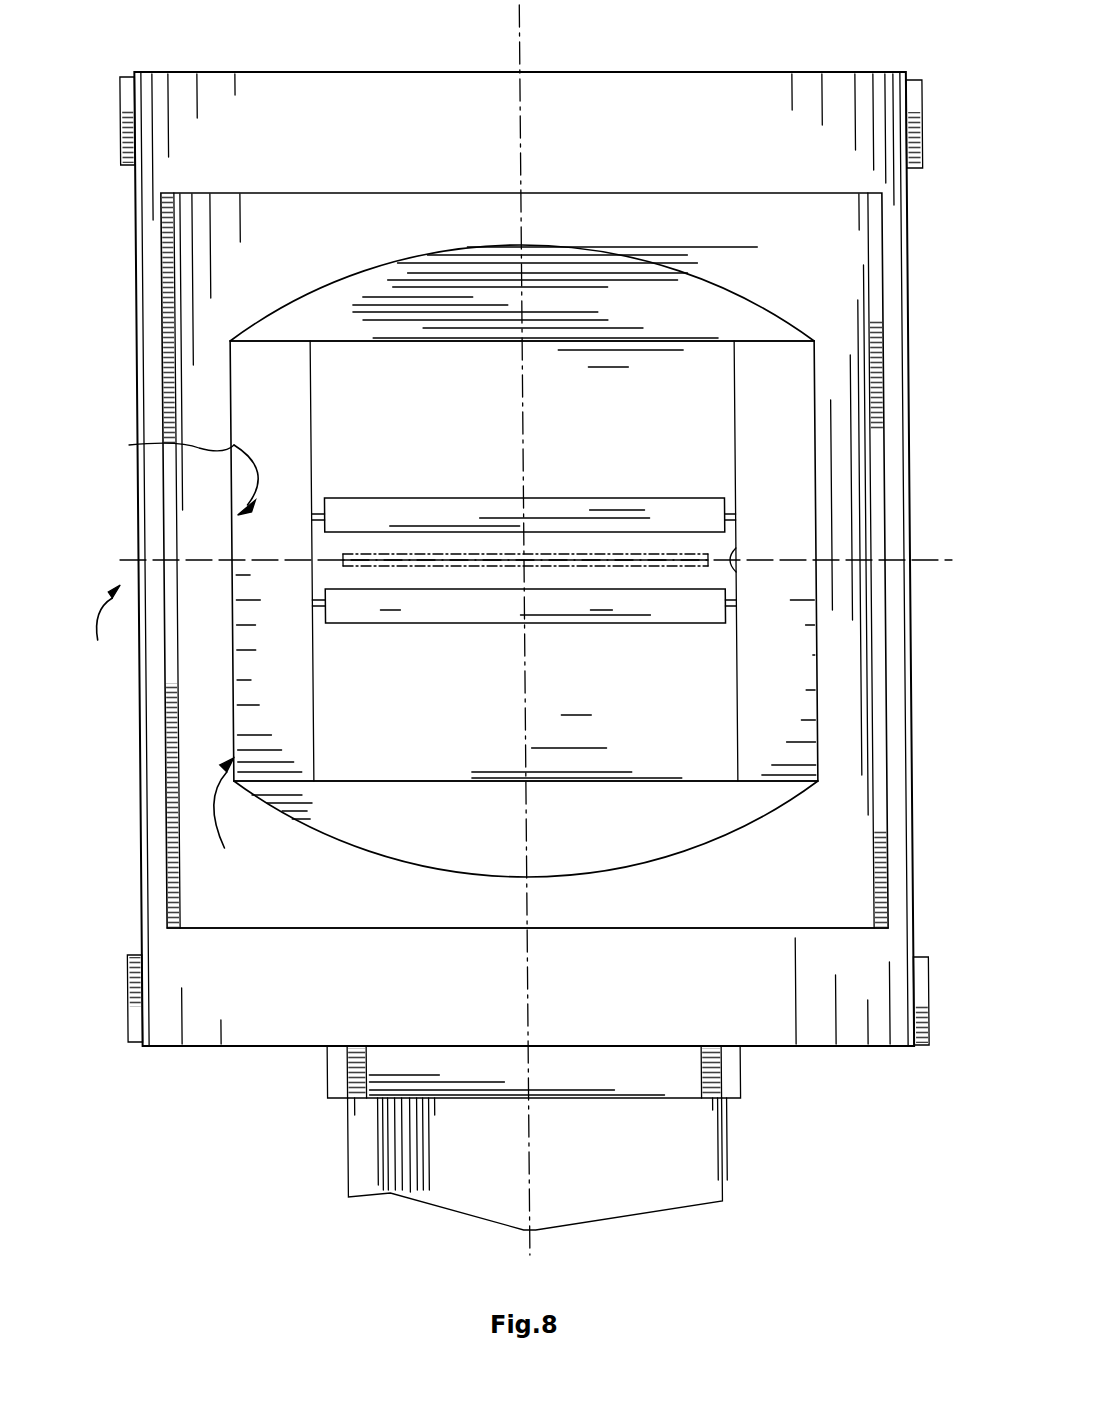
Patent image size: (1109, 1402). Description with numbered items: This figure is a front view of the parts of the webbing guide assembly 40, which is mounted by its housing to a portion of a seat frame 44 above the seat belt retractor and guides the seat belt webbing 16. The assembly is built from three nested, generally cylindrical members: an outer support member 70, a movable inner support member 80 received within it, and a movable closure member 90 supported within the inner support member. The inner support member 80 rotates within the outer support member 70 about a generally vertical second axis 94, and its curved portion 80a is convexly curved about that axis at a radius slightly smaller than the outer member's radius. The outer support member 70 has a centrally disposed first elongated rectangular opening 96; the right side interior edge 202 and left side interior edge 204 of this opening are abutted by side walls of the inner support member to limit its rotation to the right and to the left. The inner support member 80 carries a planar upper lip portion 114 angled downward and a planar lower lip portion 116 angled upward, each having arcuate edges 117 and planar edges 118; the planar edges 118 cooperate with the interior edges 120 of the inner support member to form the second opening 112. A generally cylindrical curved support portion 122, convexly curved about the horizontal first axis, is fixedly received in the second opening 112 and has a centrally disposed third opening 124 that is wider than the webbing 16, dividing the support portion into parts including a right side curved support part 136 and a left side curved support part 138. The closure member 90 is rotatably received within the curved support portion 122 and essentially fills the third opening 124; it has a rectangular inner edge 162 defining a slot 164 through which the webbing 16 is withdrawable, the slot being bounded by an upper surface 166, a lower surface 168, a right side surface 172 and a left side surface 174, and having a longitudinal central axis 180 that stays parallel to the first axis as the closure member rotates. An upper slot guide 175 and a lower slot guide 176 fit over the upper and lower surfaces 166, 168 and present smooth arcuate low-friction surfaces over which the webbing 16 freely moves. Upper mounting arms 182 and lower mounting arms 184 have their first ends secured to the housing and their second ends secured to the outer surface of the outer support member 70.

The seat belt webbing 16 is at (580, 563).
The webbing guide assembly 40 is at (103, 628).
The seat frame 44 is at (433, 1190).
The outer support member 70 is at (205, 1000).
The inner support member 80 is at (218, 240).
The curved portion 80a is at (240, 900).
The closure member 90 is at (680, 740).
The second axis 94 is at (522, 52).
The first elongated rectangular opening 96 is at (175, 795).
The second opening 112 is at (173, 472).
The upper lip portion 114 is at (530, 563).
The lower lip portion 116 is at (388, 843).
The arcuate edges 117 is at (450, 247).
The planar edges 118 is at (660, 343).
The interior edges 120 is at (232, 655).
The curved support portion 122 is at (223, 819).
The third opening 124 is at (312, 440).
The right side curved support part 136 is at (793, 398).
The left side curved support part 138 is at (268, 623).
The rectangular inner edge 162 is at (732, 560).
The slot 164 is at (565, 542).
The upper surface 166 is at (715, 540).
The lower surface 168 is at (322, 592).
The right side surface 172 is at (725, 588).
The left side surface 174 is at (330, 545).
The upper slot guide 175 is at (415, 510).
The lower slot guide 176 is at (432, 607).
The longitudinal central axis 180 is at (920, 560).
The upper mounting arms 182 is at (130, 105).
The lower mounting arms 184 is at (140, 1030).
The right side interior edge 202 is at (880, 877).
The left side interior edge 204 is at (178, 700).